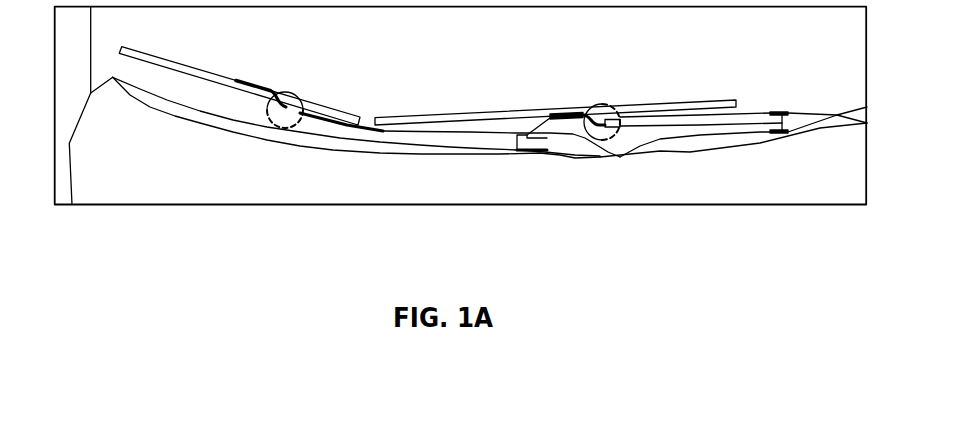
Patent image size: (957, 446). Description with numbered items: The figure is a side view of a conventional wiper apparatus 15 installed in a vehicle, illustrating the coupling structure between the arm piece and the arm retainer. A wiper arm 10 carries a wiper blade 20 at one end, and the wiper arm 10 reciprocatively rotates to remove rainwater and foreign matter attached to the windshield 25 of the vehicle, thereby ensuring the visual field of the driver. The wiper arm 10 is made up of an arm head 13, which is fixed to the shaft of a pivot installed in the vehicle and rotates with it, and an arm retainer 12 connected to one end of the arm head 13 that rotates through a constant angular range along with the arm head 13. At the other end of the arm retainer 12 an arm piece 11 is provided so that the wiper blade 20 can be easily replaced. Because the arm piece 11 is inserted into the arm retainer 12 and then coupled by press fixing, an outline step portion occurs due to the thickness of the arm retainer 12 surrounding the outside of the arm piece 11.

The wiper arm 10 is at (742, 235).
The arm piece 11 is at (639, 177).
The arm retainer 12 is at (704, 173).
The arm head 13 is at (733, 170).
The wiper apparatus 15 is at (312, 95).
The wiper blade 20 is at (501, 181).
The windshield 25 is at (356, 161).